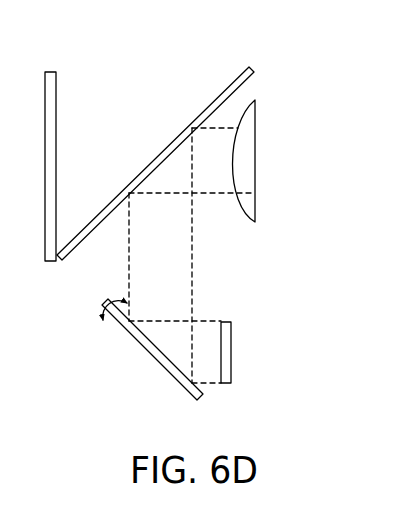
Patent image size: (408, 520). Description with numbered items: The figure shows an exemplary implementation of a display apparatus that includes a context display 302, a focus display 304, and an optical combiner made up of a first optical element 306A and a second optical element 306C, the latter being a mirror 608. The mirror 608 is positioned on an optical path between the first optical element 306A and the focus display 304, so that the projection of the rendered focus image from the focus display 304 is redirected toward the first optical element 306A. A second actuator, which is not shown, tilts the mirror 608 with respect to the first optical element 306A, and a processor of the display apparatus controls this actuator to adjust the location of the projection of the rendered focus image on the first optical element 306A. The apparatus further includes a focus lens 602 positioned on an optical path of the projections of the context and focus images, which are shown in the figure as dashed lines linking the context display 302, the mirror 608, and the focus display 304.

The context display 302 is at (57, 83).
The first optical element 306A is at (237, 72).
The focus lens 602 is at (256, 212).
The second optical element 306C is at (97, 298).
The mirror 608 is at (147, 350).
The focus display 304 is at (231, 353).